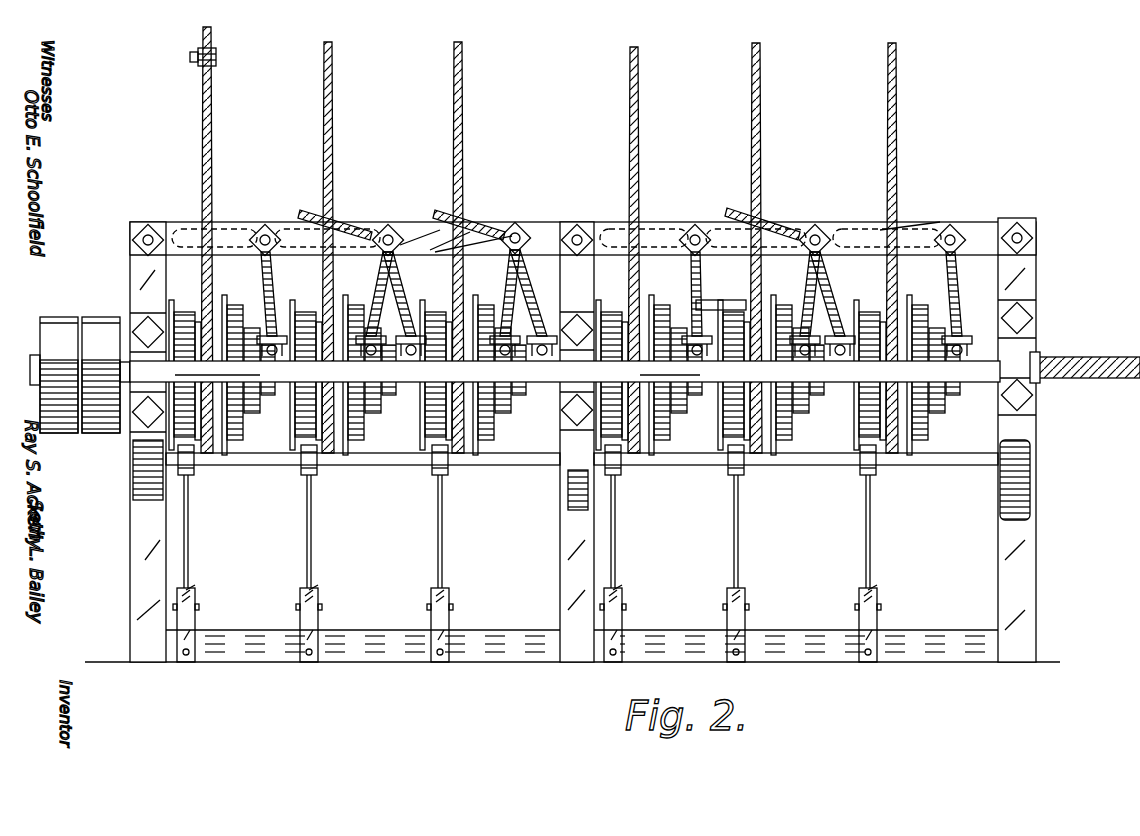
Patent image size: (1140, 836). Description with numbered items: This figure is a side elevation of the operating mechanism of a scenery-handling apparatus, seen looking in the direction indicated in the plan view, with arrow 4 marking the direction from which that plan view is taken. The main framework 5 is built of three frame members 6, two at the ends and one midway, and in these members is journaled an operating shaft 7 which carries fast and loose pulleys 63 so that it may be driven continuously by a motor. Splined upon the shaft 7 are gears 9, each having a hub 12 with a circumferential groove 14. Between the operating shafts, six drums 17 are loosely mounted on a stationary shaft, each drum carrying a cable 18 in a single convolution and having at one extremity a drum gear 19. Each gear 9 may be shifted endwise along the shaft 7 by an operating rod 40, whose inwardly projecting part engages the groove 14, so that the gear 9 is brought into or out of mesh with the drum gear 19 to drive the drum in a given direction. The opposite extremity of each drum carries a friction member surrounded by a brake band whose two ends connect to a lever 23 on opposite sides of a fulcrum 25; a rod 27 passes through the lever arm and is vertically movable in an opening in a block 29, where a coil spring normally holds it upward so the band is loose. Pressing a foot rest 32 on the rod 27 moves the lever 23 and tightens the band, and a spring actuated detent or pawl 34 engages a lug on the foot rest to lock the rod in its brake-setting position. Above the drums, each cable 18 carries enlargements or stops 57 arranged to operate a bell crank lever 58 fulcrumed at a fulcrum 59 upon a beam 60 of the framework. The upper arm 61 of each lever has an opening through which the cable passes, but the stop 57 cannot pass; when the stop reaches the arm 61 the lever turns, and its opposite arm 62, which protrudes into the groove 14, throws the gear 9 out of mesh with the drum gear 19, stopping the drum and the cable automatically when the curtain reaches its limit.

The arrow 4 is at (545, 92).
The main framework 5 is at (821, 496).
The frame members 6 is at (583, 440).
The operating shaft 7 is at (565, 373).
The gear 9 is at (240, 470).
The hub 12 is at (180, 440).
The circumferential groove 14 is at (262, 430).
The drum 17 is at (588, 279).
The cable 18 is at (210, 160).
The drum gear 19 is at (230, 470).
The lever 23 is at (866, 474).
The fulcrum 25 is at (405, 466).
The rod 27 is at (188, 546).
The block 29 is at (500, 630).
The foot rest 32 is at (199, 610).
The spring actuated detent or pawl 34 is at (195, 592).
The operating rod 40 is at (1050, 355).
The stop 57 is at (218, 58).
The bell crank lever 58 is at (721, 283).
The fulcrum 59 is at (820, 228).
The beam 60 is at (715, 228).
The upper arm 61 is at (345, 215).
The opposite arm 62 is at (274, 280).
The fast and loose pulleys 63 is at (98, 315).